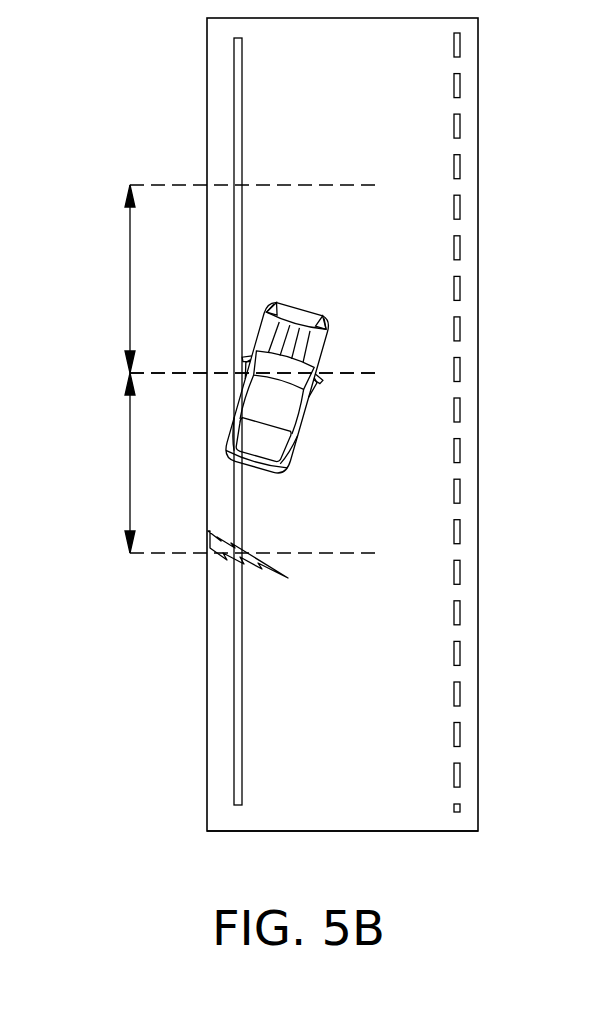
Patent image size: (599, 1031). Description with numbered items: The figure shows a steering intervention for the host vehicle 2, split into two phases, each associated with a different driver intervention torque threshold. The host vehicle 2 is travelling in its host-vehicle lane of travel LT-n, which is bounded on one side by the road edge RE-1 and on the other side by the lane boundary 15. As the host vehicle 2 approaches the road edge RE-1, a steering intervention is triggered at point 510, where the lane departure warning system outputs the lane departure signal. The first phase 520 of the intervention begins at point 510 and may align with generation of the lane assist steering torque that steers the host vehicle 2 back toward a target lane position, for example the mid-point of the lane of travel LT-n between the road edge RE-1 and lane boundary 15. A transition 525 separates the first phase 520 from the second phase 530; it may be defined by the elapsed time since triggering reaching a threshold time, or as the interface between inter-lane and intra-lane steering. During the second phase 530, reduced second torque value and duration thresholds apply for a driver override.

The host vehicle 2 is at (262, 332).
The lane boundary 15 is at (462, 714).
The point 510 is at (208, 561).
The first phase 520 is at (130, 463).
The transition 525 is at (130, 373).
The second phase 530 is at (130, 279).
The road edge RE-1 is at (234, 758).
The host-vehicle lane of travel LT-n is at (345, 813).